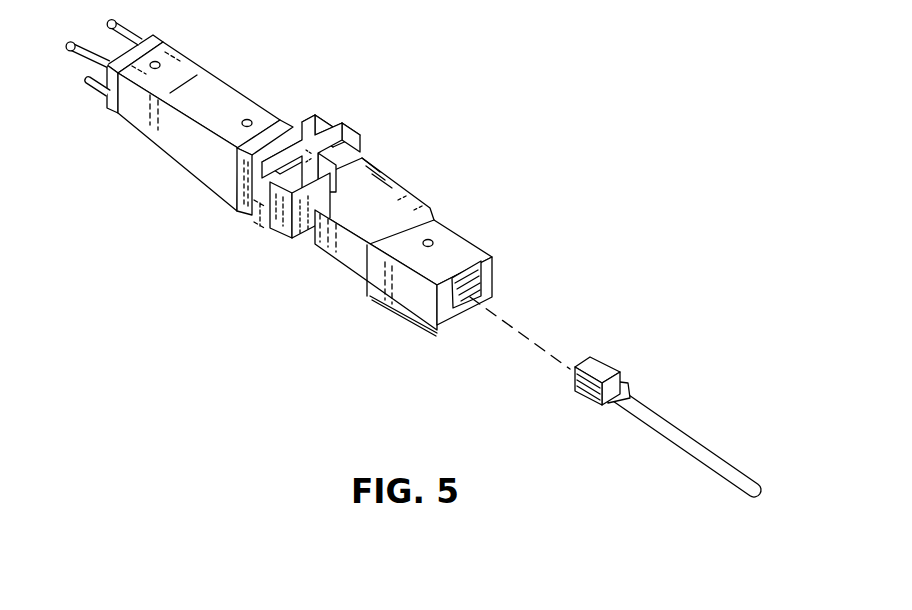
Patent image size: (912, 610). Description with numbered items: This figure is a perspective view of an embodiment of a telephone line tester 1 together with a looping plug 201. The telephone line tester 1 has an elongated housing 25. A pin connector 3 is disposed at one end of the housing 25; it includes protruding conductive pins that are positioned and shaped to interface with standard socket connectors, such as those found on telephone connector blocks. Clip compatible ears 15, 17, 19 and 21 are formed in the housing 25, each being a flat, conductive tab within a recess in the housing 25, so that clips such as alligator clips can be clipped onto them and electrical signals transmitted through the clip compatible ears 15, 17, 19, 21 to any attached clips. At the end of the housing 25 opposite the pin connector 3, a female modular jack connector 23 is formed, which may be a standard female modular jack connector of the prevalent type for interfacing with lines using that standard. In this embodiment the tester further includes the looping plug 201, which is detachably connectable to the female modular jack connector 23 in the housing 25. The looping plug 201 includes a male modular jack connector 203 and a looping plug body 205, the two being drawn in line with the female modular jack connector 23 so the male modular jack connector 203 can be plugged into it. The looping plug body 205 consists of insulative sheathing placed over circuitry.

The telephone line tester 1 is at (387, 89).
The pin connector 3 is at (107, 58).
The clip compatible ear 15 is at (303, 238).
The clip compatible ear 17 is at (360, 166).
The clip compatible ear 19 is at (262, 214).
The clip compatible ear 21 is at (322, 138).
The female modular jack connector 23 is at (482, 273).
The housing 25 is at (175, 141).
The looping plug 201 is at (692, 412).
The male modular jack connector 203 is at (597, 367).
The looping plug body 205 is at (711, 445).